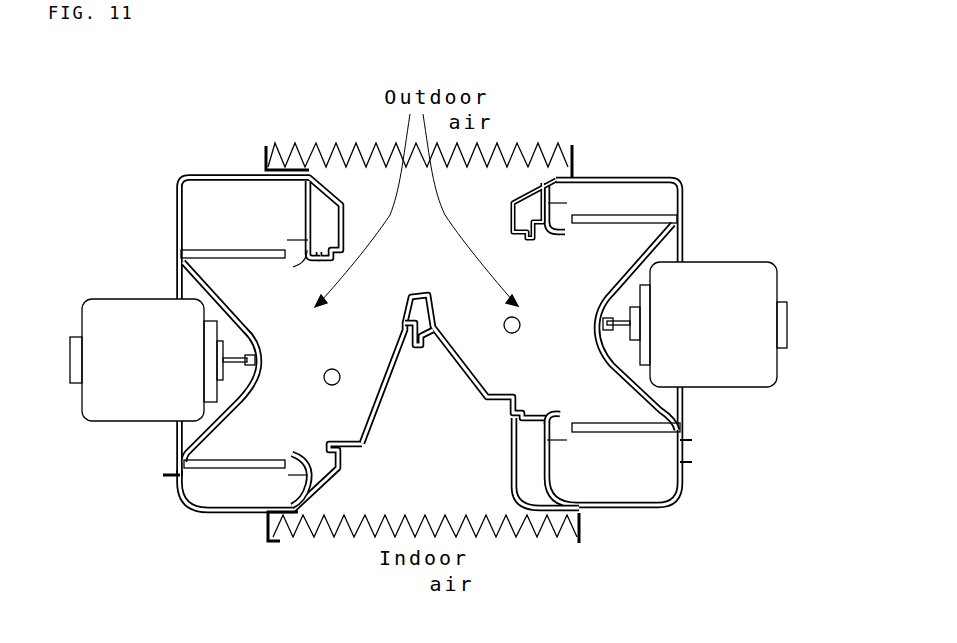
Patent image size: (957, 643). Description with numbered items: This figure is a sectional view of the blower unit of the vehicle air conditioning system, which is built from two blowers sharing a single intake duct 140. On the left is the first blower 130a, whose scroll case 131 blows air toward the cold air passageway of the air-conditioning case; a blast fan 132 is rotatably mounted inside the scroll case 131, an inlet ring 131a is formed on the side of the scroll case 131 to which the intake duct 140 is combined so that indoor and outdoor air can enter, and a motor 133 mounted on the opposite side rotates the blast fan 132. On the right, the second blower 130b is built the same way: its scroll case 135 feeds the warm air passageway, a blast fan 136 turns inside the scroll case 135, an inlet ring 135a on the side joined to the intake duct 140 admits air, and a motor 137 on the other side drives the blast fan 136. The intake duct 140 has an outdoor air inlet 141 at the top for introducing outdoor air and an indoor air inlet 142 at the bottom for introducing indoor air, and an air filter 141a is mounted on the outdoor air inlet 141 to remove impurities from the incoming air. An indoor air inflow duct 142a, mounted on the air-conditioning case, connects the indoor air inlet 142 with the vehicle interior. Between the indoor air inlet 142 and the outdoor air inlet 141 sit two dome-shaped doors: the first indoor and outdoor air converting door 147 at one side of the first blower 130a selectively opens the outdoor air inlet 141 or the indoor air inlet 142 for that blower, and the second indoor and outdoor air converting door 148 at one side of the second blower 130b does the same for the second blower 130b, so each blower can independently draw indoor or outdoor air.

The first blower 130a is at (207, 315).
The second blower 130b is at (630, 303).
The scroll case 131 is at (179, 180).
The inlet ring 131a is at (309, 263).
The blast fan 132 is at (243, 250).
The motor 133 is at (115, 414).
The scroll case 135 is at (683, 180).
The inlet ring 135a is at (552, 230).
The blast fan 136 is at (636, 222).
The motor 137 is at (736, 366).
The intake duct 140 is at (257, 148).
The outdoor air inlet 141 is at (410, 111).
The air filter 141a is at (376, 145).
The indoor air inlet 142 is at (424, 557).
The indoor air inflow duct 142a is at (338, 538).
The first indoor and outdoor air converting door 147 is at (360, 440).
The second indoor and outdoor air converting door 148 is at (513, 400).